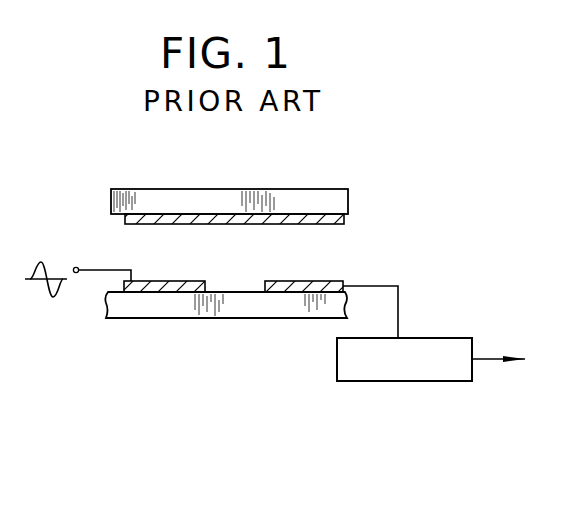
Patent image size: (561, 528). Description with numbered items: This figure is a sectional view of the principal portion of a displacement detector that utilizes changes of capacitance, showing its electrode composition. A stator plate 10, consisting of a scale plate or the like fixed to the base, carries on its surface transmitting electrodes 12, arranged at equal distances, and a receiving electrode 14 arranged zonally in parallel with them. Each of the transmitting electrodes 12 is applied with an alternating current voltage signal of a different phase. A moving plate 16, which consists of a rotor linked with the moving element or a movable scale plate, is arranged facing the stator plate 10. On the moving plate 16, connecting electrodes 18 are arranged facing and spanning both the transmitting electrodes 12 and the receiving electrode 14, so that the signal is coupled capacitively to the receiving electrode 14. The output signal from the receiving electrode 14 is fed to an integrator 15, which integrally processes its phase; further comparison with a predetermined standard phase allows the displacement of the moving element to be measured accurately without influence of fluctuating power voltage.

The stator plate 10 is at (255, 320).
The transmitting electrodes 12 is at (152, 281).
The receiving electrode 14 is at (313, 281).
The integrator 15 is at (416, 337).
The moving plate 16 is at (287, 194).
The connecting electrodes 18 is at (344, 220).